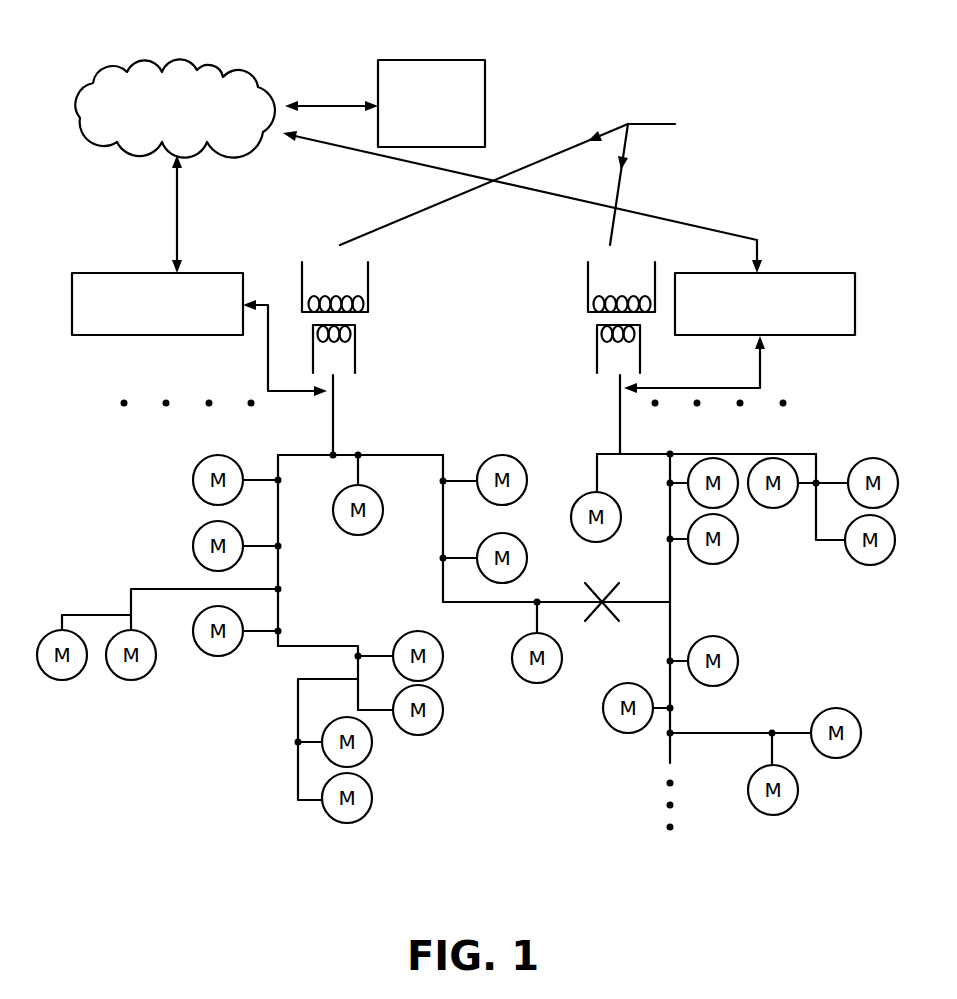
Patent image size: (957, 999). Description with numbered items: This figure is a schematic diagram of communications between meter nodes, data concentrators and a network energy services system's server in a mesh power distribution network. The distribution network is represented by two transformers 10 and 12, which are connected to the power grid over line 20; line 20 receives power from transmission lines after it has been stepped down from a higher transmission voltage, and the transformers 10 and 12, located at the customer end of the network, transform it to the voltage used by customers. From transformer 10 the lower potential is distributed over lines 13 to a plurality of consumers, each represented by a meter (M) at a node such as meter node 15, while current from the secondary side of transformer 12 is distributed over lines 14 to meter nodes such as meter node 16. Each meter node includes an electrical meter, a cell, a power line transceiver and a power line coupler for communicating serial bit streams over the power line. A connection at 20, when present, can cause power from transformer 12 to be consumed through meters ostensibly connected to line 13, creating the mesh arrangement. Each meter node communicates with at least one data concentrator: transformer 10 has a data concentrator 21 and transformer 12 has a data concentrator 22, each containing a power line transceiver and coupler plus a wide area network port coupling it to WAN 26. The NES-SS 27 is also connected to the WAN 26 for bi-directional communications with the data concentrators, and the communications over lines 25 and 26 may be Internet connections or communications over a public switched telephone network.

The transformer 10 is at (378, 322).
The transformer 12 is at (570, 322).
The lines 13 is at (334, 421).
The lines 14 is at (619, 422).
The meter node 15 is at (198, 497).
The meter node 16 is at (580, 497).
The line 20 is at (645, 124).
The data concentrator 21 is at (226, 273).
The data concentrator 22 is at (812, 273).
The lines 25 is at (345, 148).
The wide area network (WAN) 26 is at (212, 62).
The NES-SS 27 is at (460, 60).